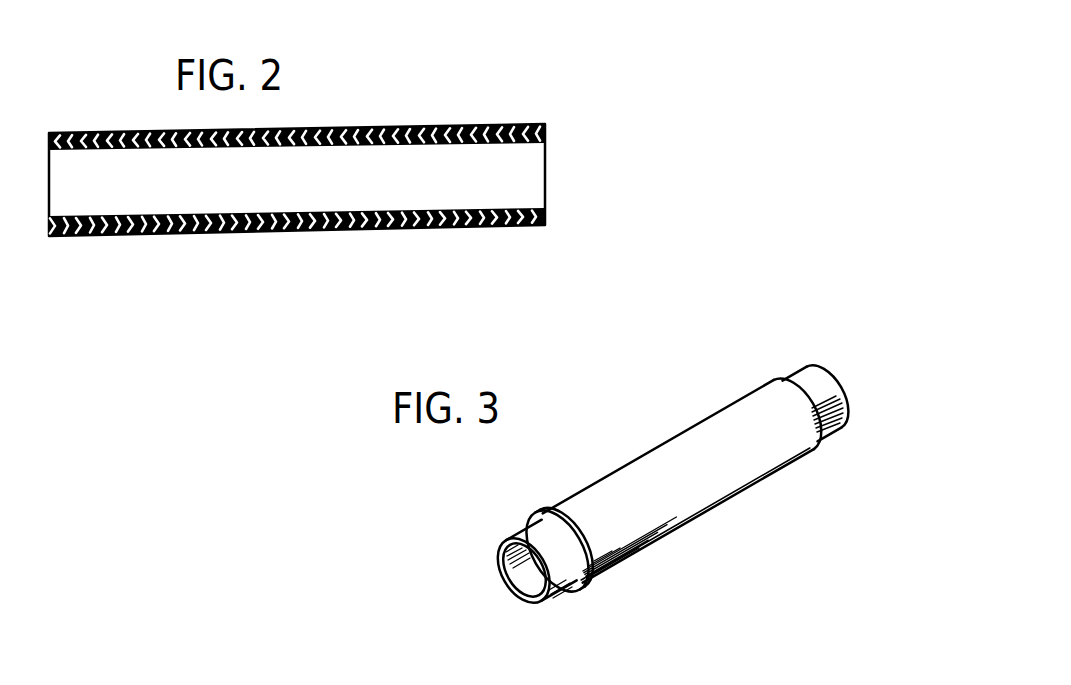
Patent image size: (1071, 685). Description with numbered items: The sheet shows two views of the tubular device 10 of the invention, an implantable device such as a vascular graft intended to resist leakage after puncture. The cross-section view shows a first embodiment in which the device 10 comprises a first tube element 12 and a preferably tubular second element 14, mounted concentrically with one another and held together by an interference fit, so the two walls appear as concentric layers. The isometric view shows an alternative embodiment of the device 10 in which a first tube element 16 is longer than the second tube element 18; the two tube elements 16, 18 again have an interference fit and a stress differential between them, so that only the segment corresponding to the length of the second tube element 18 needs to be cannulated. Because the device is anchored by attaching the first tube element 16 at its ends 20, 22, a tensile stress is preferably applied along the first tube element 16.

In FIG. 2, the tubular device 10 is at (342, 236).
In FIG. 3, the tubular device 10 is at (657, 464).
In FIG. 2, the first tube element 12 is at (505, 208).
In FIG. 2, the second element 14 is at (388, 127).
In FIG. 3, the first tube element 16 is at (513, 537).
In FIG. 3, the second tube element 18 is at (634, 478).
In FIG. 3, the end 20 is at (534, 604).
In FIG. 3, the end 22 is at (830, 370).